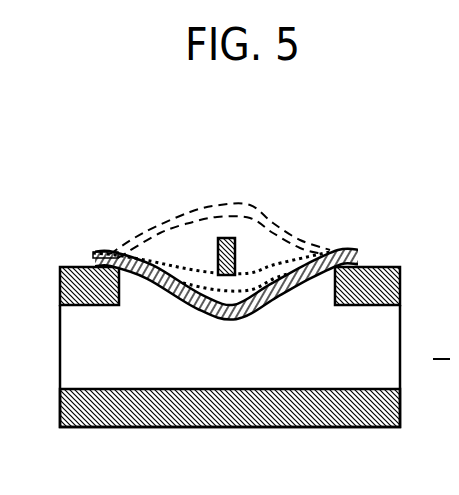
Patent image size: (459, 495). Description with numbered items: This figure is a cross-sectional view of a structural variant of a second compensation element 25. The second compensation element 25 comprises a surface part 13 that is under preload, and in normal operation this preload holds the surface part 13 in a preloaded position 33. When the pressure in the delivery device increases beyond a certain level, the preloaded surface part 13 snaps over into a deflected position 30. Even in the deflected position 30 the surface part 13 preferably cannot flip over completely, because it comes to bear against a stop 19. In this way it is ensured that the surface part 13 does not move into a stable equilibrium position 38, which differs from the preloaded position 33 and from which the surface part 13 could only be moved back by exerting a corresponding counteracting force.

The surface part 13 is at (335, 250).
The stop 19 is at (237, 240).
The second compensation element 25 is at (225, 175).
The deflected position 30 is at (160, 252).
The preloaded position 33 is at (203, 302).
The stable equilibrium position 38 is at (190, 215).